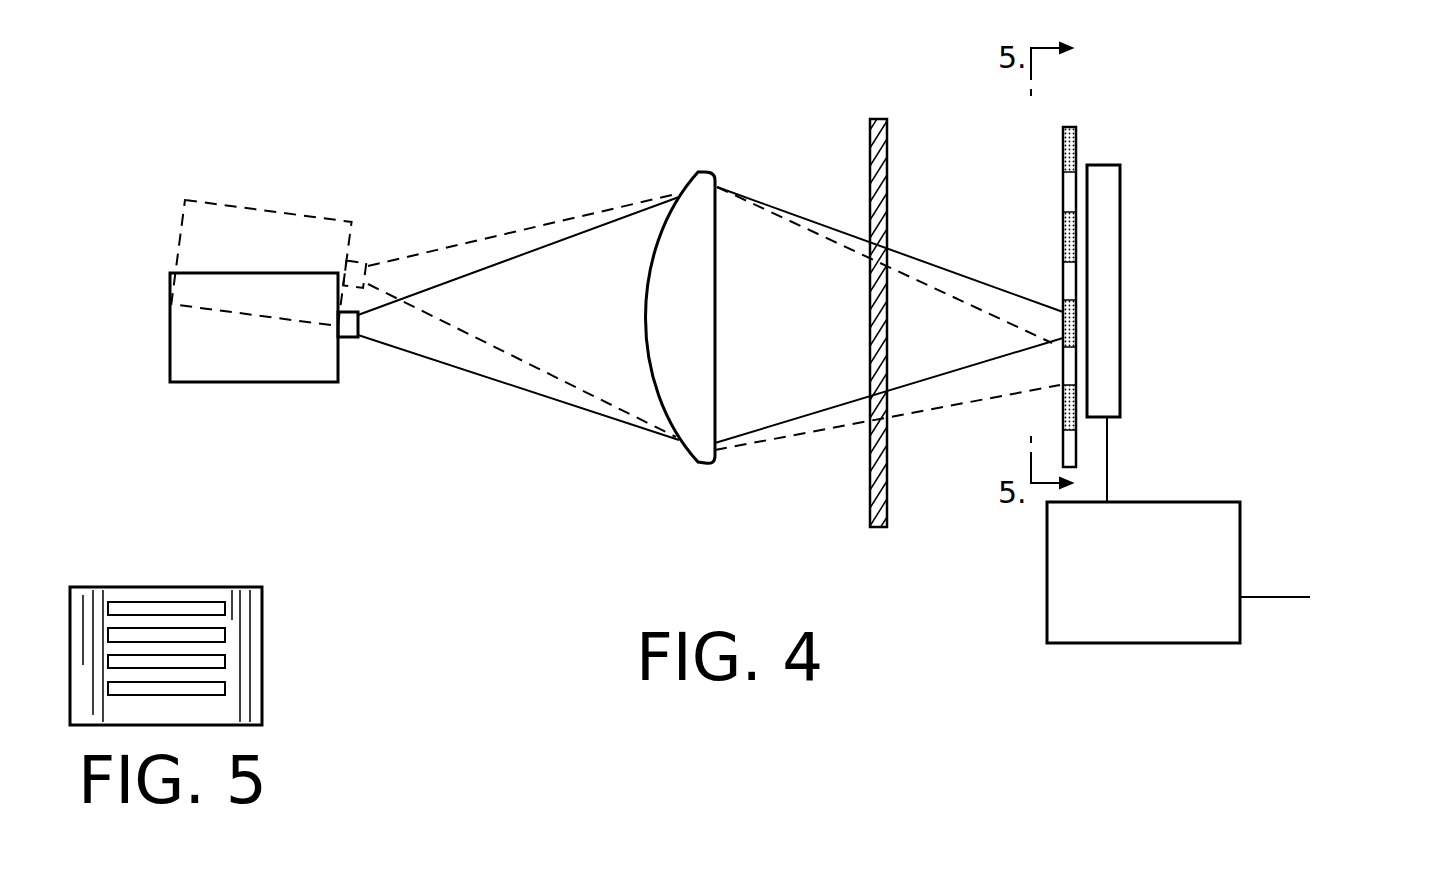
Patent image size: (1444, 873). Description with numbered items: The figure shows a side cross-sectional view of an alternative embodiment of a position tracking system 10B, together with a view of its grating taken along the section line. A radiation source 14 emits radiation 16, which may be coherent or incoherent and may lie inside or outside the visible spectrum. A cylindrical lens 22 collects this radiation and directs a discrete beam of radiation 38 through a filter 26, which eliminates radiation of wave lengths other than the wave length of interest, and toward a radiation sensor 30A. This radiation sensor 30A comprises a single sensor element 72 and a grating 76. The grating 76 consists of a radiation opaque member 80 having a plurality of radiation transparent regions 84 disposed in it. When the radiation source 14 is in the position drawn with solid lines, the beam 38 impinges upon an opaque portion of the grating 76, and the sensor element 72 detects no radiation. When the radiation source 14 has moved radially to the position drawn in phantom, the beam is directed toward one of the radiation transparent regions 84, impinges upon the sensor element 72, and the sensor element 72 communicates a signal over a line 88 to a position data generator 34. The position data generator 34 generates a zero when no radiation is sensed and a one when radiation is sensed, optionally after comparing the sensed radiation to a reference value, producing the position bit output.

In FIG. 4, the radiation source 14 is at (265, 383).
In FIG. 4, the radiation 16 is at (468, 372).
In FIG. 4, the cylindrical lens 22 is at (684, 448).
In FIG. 4, the filter 26 is at (893, 145).
In FIG. 4, the discrete beam of radiation 38 is at (821, 224).
In FIG. 4, the position tracking system 10B is at (774, 462).
In FIG. 4, the grating 76 is at (1062, 150).
In FIG. 5, the grating 76 is at (210, 621).
In FIG. 4, the radiation sensor 30A is at (1097, 277).
In FIG. 4, the sensor element 72 is at (1125, 235).
In FIG. 4, the line 88 is at (1108, 462).
In FIG. 4, the position data generator 34 is at (1240, 525).
In FIG. 5, the radiation opaque member 80 is at (262, 607).
In FIG. 5, the radiation transparent regions 84 is at (225, 635).